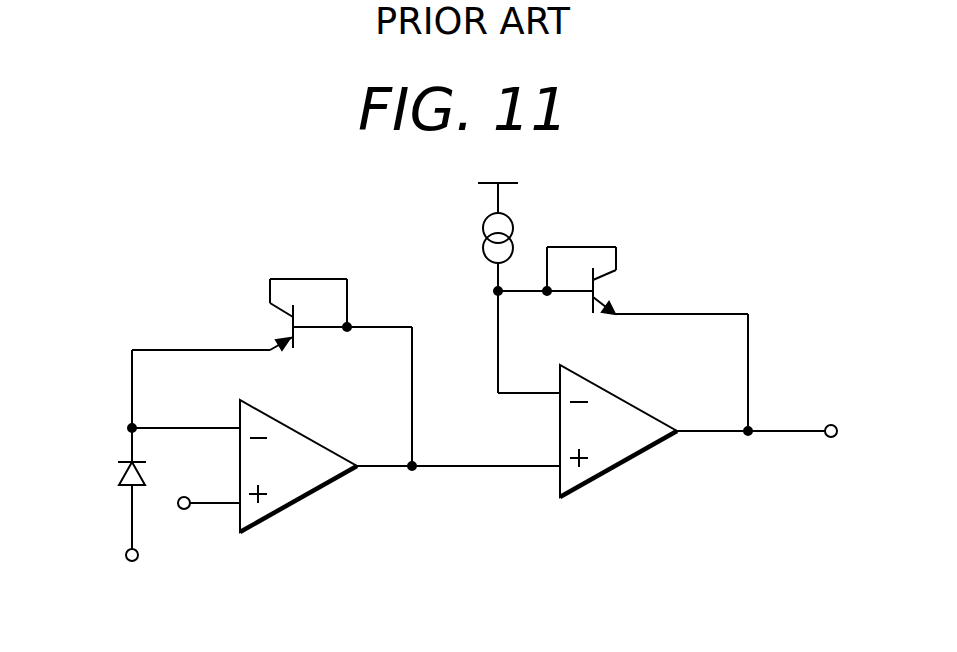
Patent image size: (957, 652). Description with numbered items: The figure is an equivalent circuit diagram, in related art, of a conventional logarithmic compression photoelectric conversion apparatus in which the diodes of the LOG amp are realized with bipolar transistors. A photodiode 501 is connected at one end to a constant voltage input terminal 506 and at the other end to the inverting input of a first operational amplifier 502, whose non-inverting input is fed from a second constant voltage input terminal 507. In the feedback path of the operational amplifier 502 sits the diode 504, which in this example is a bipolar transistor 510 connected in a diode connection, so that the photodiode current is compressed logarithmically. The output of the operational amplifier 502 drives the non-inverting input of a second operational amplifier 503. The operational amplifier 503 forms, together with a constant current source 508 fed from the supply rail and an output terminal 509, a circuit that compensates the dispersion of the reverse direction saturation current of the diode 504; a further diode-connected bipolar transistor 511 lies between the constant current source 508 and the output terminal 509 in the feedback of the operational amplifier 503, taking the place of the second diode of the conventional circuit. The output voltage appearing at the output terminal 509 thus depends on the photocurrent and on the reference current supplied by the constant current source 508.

The photodiode 501 is at (118, 470).
The operational amplifier 502 is at (302, 430).
The operational amplifier 503 is at (614, 393).
The diode 504 is at (306, 309).
The constant voltage input terminal 506 is at (128, 562).
The constant voltage input terminal 507 is at (182, 511).
The constant current source 508 is at (513, 221).
The output terminal 509 is at (836, 425).
The bipolar transistor 510 is at (272, 322).
The NPN transistor 511 is at (617, 288).